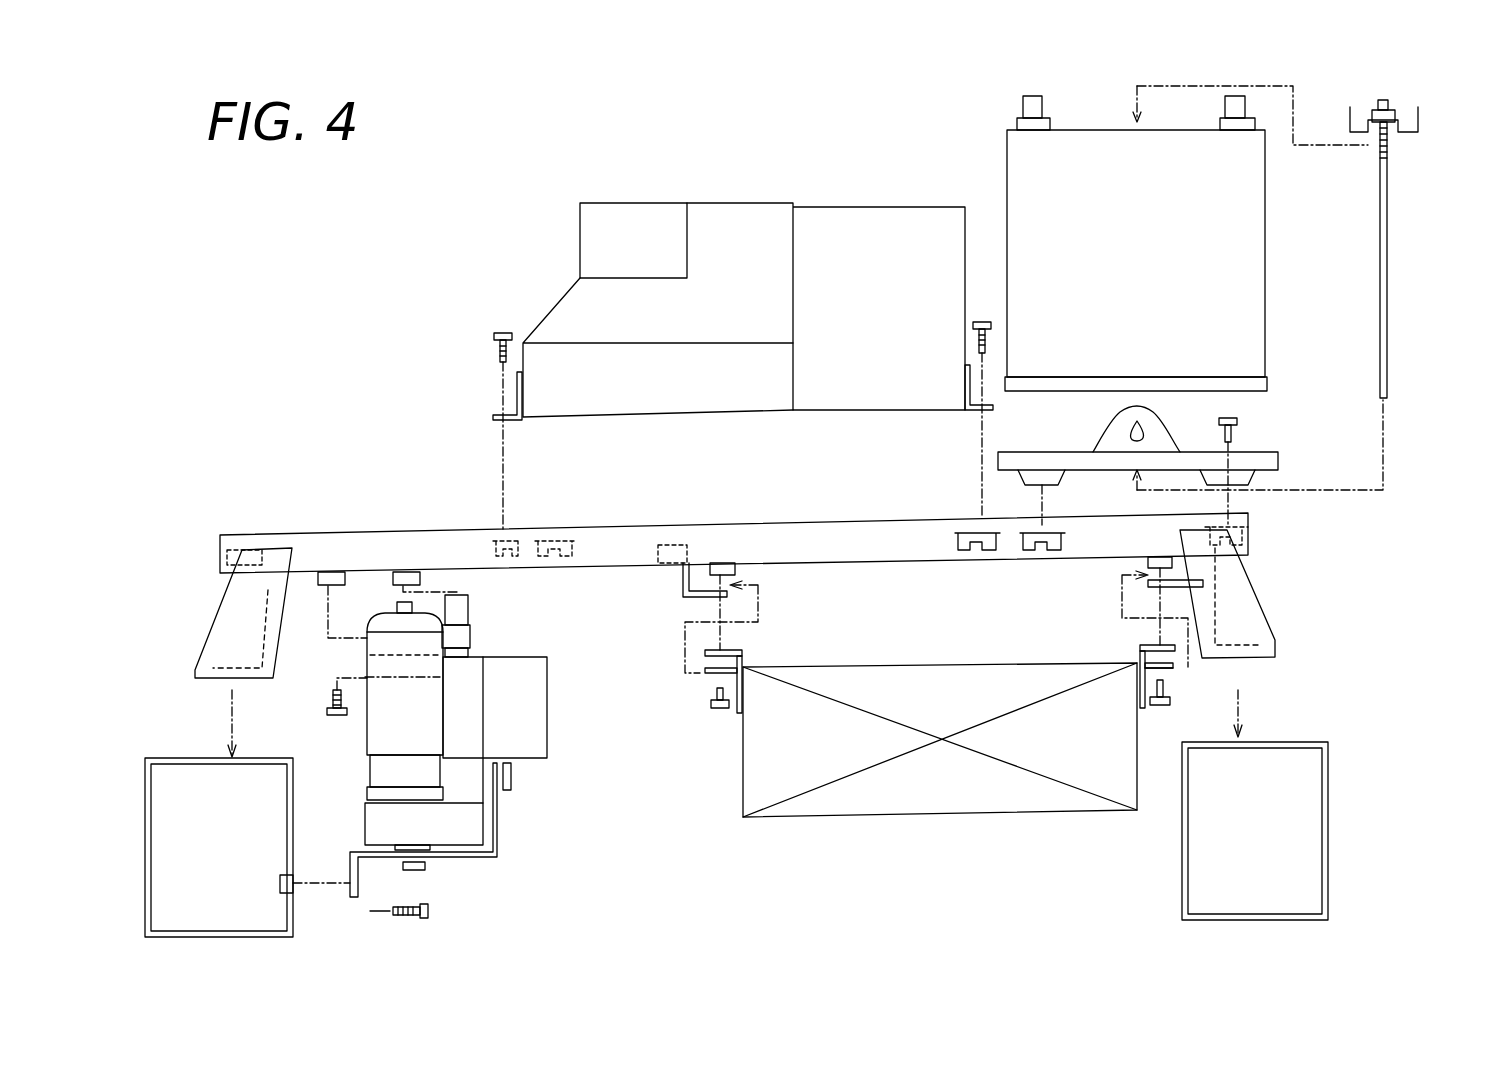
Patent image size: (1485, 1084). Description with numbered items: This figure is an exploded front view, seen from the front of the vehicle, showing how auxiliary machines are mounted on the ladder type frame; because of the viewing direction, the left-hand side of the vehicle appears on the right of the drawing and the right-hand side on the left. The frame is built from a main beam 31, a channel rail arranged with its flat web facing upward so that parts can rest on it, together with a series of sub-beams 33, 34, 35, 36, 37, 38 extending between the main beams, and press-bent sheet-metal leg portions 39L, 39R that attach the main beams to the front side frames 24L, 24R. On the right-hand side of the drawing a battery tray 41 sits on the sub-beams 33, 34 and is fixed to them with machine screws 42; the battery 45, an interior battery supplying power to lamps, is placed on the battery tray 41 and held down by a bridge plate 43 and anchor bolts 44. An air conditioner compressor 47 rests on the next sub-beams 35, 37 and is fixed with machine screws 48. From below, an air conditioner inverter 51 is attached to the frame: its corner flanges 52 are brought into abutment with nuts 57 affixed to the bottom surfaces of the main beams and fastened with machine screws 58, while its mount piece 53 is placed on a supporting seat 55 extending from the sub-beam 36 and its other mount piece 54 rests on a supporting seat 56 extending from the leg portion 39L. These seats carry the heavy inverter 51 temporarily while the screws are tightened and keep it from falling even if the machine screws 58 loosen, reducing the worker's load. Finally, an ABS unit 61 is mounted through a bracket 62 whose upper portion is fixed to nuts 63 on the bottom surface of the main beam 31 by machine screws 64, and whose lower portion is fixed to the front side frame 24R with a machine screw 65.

The front side frame 24L is at (1185, 878).
The front side frame 24R is at (230, 938).
The main beam 31 is at (442, 535).
The sub-beam 33 is at (1248, 530).
The sub-beam 34 is at (1040, 560).
The sub-beam 35 is at (955, 548).
The sub-beam 36 is at (678, 552).
The sub-beam 37 is at (550, 568).
The sub-beam 38 is at (233, 540).
The leg portion 39R is at (210, 618).
The leg portion 39L is at (1262, 598).
The battery tray 41 is at (1280, 458).
The machine screw 42 is at (1238, 428).
The bridge plate 43 is at (1418, 118).
The anchor bolt 44 is at (1388, 250).
The battery 45 is at (1267, 300).
The air conditioner compressor 47 is at (820, 205).
The machine screw 48 is at (500, 330).
The air conditioner inverter 51 is at (905, 818).
The flange 52 is at (705, 655).
The mount piece 53 is at (712, 688).
The mount piece 54 is at (1175, 690).
The supporting seat 55 is at (705, 596).
The supporting seat 56 is at (1205, 600).
The nut 57 is at (742, 560).
The machine screw 58 is at (720, 712).
The ABS unit 61 is at (520, 765).
The bracket 62 is at (493, 852).
The nut 63 is at (395, 572).
The machine screw 64 is at (328, 706).
The machine screw 65 is at (430, 908).